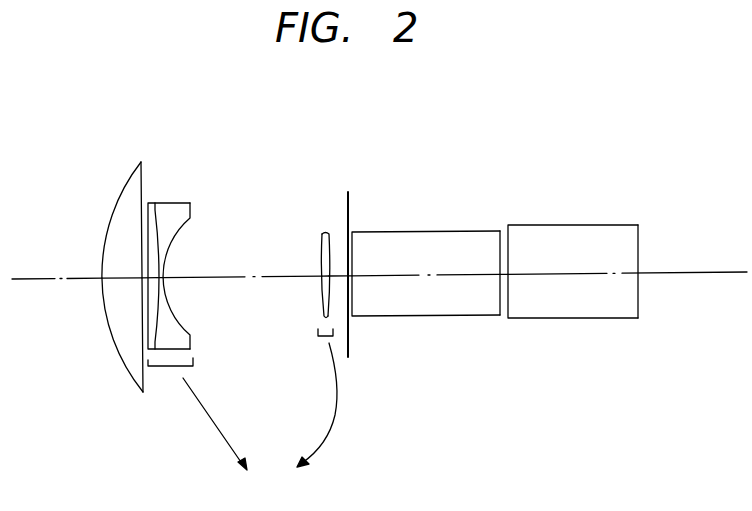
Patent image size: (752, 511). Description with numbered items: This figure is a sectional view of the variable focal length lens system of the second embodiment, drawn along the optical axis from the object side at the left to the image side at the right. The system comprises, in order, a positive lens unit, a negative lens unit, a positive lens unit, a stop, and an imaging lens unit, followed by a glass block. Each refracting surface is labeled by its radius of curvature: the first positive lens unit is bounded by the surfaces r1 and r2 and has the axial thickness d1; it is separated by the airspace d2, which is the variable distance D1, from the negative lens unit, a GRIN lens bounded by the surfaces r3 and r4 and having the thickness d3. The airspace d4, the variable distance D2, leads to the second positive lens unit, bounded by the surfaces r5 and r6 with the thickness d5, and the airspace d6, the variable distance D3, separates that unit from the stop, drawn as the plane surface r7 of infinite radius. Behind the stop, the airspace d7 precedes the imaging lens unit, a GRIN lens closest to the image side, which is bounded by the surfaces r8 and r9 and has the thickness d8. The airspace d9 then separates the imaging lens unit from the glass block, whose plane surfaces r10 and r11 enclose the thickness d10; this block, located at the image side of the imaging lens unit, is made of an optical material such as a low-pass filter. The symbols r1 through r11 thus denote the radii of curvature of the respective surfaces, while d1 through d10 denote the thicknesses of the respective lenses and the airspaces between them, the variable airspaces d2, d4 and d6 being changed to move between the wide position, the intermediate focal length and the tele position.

The radius of curvature of the first lens surface r1 is at (121, 189).
The radius of curvature of the second lens surface r2 is at (138, 193).
The radius of curvature of the third lens surface r3 is at (155, 214).
The radius of curvature of the fourth lens surface r4 is at (183, 220).
The radius of curvature of the fifth lens surface r5 is at (320, 246).
The radius of curvature of the sixth lens surface r6 is at (330, 232).
The stop surface r7 is at (347, 209).
The radius of curvature of the eighth lens surface r8 is at (353, 258).
The radius of curvature of the ninth lens surface r9 is at (500, 247).
The radius of curvature of the tenth surface r10 is at (508, 247).
The radius of curvature of the eleventh surface r11 is at (638, 240).
The thickness of the first lens d1 is at (112, 281).
The airspace between the first and second lenses d2 is at (157, 276).
The thickness of the second lens d3 is at (159, 284).
The airspace between the second and third lenses d4 is at (233, 280).
The thickness of the third lens d5 is at (322, 279).
The airspace between the third lens and the stop d6 is at (330, 274).
The airspace between the stop and the imaging lens d7 is at (352, 281).
The thickness of the imaging lens d8 is at (418, 278).
The airspace between the imaging lens and the glass block d9 is at (503, 276).
The thickness of the glass block d10 is at (580, 275).